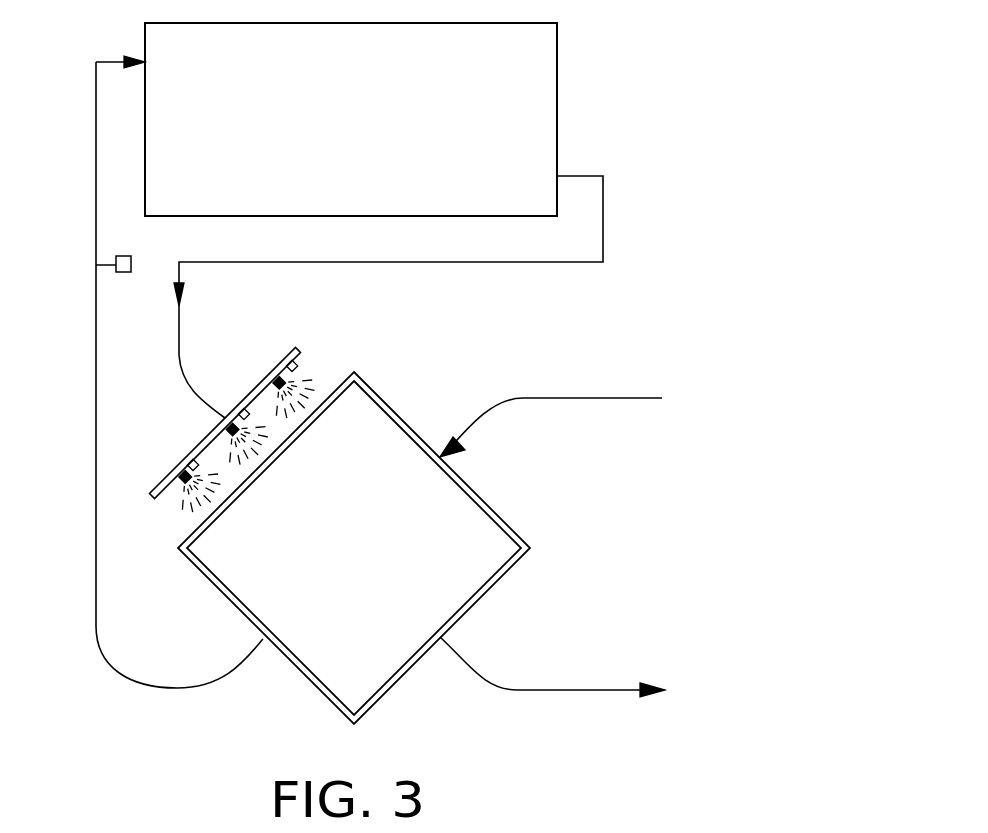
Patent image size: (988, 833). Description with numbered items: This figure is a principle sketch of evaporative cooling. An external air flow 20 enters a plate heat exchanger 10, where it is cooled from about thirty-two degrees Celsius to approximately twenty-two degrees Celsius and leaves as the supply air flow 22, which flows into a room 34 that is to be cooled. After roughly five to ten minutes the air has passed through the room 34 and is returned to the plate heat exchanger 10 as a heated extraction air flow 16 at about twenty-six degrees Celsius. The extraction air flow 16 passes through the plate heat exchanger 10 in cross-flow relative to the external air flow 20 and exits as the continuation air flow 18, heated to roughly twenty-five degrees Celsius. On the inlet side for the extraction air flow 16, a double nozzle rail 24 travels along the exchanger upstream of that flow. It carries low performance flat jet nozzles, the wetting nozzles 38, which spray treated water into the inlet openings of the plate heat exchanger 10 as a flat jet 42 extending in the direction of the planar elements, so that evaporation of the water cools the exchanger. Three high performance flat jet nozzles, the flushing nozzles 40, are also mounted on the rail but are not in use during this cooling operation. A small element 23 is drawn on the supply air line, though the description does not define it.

The plate heat exchanger 10 is at (363, 556).
The extraction air flow 16 is at (181, 321).
The continuation air flow 18 is at (594, 690).
The external air flow 20 is at (597, 398).
The supply air flow 22 is at (96, 338).
The sensor 23 is at (118, 270).
The double nozzle rail 24 is at (152, 484).
The room 34 is at (368, 122).
The wetting nozzles 38 is at (181, 471).
The flushing nozzles 40 is at (188, 460).
The flat jet 42 is at (192, 513).